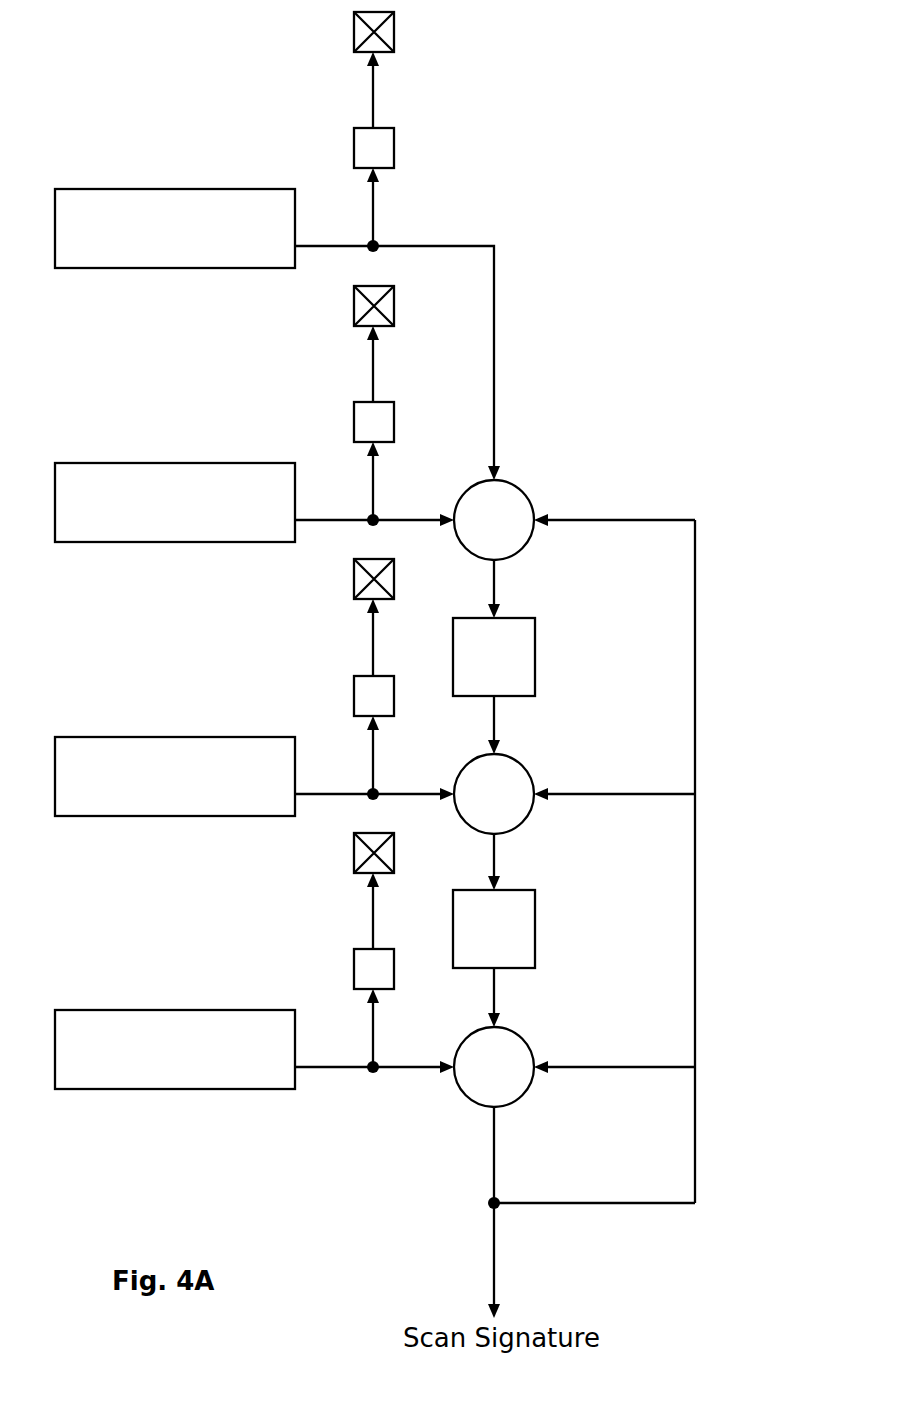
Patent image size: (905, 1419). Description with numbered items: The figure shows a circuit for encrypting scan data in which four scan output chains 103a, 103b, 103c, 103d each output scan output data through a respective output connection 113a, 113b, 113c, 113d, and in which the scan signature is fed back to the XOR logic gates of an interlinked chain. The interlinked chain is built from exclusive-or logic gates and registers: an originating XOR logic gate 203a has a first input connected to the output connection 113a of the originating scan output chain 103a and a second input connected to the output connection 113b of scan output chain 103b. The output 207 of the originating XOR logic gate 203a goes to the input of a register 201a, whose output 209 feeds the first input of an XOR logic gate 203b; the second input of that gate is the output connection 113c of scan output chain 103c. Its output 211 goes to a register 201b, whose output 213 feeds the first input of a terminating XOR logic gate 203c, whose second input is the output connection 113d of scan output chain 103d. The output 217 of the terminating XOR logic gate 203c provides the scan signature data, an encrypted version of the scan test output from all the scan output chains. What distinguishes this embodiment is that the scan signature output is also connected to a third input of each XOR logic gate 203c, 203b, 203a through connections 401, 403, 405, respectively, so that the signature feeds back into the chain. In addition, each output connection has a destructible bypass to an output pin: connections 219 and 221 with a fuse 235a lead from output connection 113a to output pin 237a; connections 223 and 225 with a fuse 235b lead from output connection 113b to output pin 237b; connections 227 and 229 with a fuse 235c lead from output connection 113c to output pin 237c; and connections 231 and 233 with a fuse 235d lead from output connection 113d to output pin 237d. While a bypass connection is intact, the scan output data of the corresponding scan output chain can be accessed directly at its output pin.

The scan output chain 103a is at (112, 189).
The scan output chain 103b is at (112, 463).
The scan output chain 103c is at (112, 737).
The scan output chain 103d is at (112, 1010).
The output connection 113a is at (333, 247).
The output connection 113b is at (333, 521).
The output connection 113c is at (333, 795).
The output connection 113d is at (333, 1068).
The connection 219 is at (375, 218).
The connection 223 is at (375, 492).
The connection 227 is at (375, 766).
The connection 231 is at (375, 1039).
The connection 221 is at (373, 100).
The connection 225 is at (373, 374).
The connection 229 is at (373, 647).
The connection 233 is at (373, 921).
The fuse 235a is at (394, 147).
The fuse 235b is at (394, 420).
The fuse 235c is at (394, 694).
The fuse 235d is at (394, 967).
The output pin 237a is at (394, 30).
The output pin 237b is at (394, 304).
The output pin 237c is at (394, 580).
The output pin 237d is at (394, 853).
The originating XOR logic gate 203a is at (522, 488).
The XOR logic gate 203b is at (522, 762).
The terminating XOR logic gate 203c is at (522, 1035).
The register 201a is at (535, 655).
The register 201b is at (535, 927).
The output 207 is at (494, 578).
The output 209 is at (494, 715).
The output 211 is at (494, 852).
The output 213 is at (494, 988).
The output 217 is at (494, 1145).
The connection 401 is at (595, 1067).
The connection 403 is at (595, 794).
The connection 405 is at (595, 520).